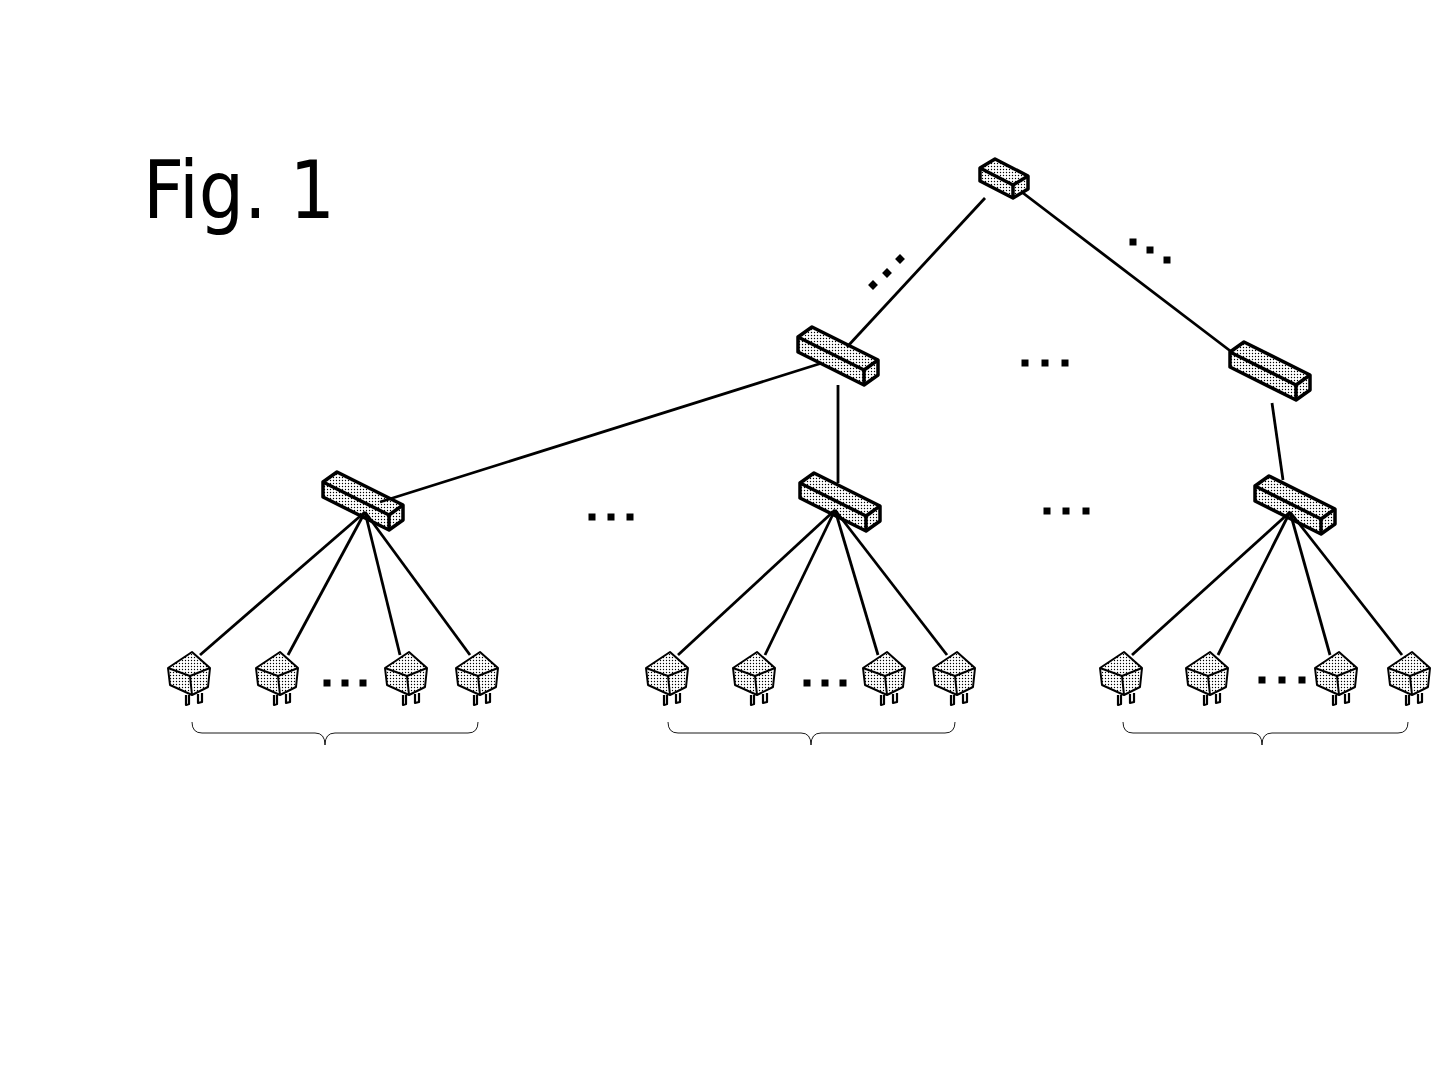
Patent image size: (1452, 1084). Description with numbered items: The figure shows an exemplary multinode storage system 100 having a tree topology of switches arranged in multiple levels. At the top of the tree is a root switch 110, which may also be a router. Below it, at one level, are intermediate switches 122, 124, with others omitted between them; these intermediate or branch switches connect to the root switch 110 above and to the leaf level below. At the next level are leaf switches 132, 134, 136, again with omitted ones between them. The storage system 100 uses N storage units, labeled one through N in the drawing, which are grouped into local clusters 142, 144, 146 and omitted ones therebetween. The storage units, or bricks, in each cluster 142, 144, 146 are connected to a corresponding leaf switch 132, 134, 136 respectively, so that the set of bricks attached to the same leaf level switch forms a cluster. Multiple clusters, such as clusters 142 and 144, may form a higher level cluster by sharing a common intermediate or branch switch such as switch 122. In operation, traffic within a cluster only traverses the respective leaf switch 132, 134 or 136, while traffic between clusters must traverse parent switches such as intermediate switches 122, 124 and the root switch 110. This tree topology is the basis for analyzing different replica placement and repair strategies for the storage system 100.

The storage system 100 is at (586, 122).
The root switch 110 is at (990, 160).
The intermediate switch 122 is at (800, 337).
The intermediate switch 124 is at (1243, 348).
The leaf switch 132 is at (333, 478).
The leaf switch 134 is at (815, 478).
The leaf switch 136 is at (1258, 485).
The local cluster 142 is at (325, 745).
The local cluster 144 is at (811, 745).
The local cluster 146 is at (1262, 745).